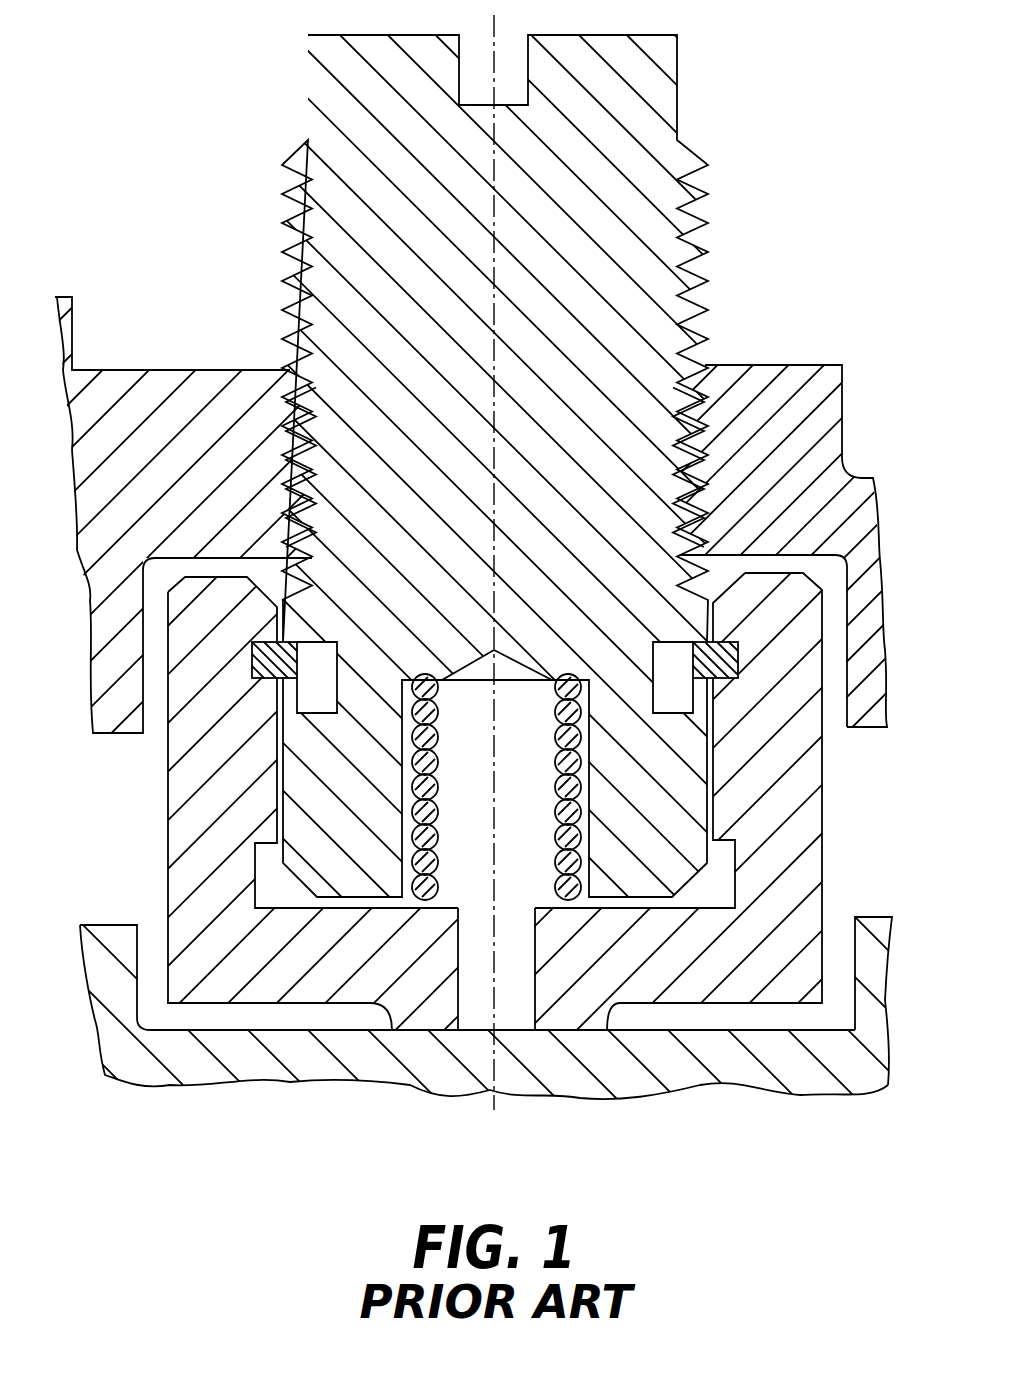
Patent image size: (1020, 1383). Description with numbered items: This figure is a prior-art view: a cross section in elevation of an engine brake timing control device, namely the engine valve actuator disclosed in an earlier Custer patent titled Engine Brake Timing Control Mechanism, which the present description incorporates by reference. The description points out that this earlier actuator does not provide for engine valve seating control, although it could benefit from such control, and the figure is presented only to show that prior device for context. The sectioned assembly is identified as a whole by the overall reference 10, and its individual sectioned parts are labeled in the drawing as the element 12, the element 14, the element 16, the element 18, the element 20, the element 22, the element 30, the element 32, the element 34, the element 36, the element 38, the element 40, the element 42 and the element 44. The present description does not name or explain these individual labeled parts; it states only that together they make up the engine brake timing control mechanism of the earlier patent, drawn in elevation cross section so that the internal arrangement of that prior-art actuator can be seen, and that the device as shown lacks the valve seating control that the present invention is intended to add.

The fastener assembly 10 is at (838, 225).
The threaded bolt 12 is at (677, 116).
The upper housing body 14 is at (157, 387).
The central axis 16 is at (497, 272).
The annular groove 18 is at (320, 645).
The base plate 20 is at (875, 917).
The lower body 22 is at (890, 793).
The insert sleeve 30 is at (813, 830).
The O-ring seal 32 is at (252, 652).
The annular clearance gap 34 is at (740, 552).
The central bore 36 is at (532, 968).
The bore bottom 38 is at (420, 1032).
The annular groove 40 is at (702, 675).
The coil spring 42 is at (557, 717).
The conical tip 44 is at (467, 692).